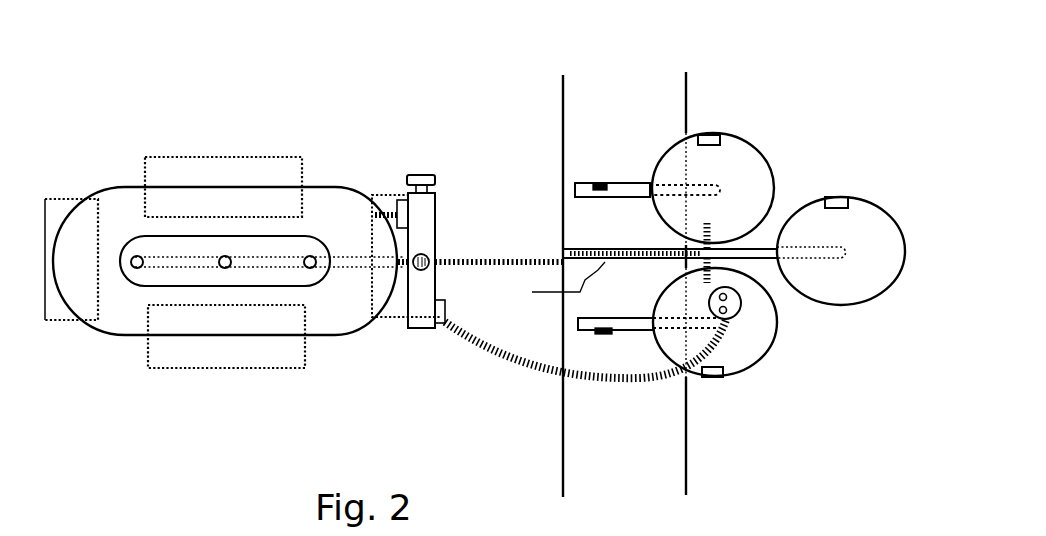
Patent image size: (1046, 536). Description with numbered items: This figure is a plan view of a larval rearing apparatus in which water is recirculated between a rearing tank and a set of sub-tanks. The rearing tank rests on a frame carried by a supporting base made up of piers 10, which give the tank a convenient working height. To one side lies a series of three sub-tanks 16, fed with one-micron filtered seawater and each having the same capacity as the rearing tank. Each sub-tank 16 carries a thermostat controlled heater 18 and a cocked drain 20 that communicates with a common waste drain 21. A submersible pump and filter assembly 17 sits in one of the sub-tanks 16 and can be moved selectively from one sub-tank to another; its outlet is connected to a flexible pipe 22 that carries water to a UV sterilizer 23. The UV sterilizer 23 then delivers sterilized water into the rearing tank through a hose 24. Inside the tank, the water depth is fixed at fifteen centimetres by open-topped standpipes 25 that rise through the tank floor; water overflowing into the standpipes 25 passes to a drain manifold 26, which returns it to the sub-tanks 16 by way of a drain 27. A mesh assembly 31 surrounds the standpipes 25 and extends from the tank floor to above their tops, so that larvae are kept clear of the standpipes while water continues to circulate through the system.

The piers 10 is at (185, 167).
The sub-tanks 16 is at (738, 155).
The submersible pump and filter assembly 17 is at (730, 318).
The thermostat controlled heater 18 is at (708, 132).
The cocked drain 20 is at (623, 183).
The waste drain 21 is at (625, 92).
The flexible pipe 22 is at (492, 357).
The UV sterilizer 23 is at (420, 215).
The hose 24 is at (395, 210).
The standpipes 25 is at (135, 256).
The drain manifold 26 is at (343, 255).
The drain 27 is at (487, 258).
The mesh assembly 31 is at (315, 283).